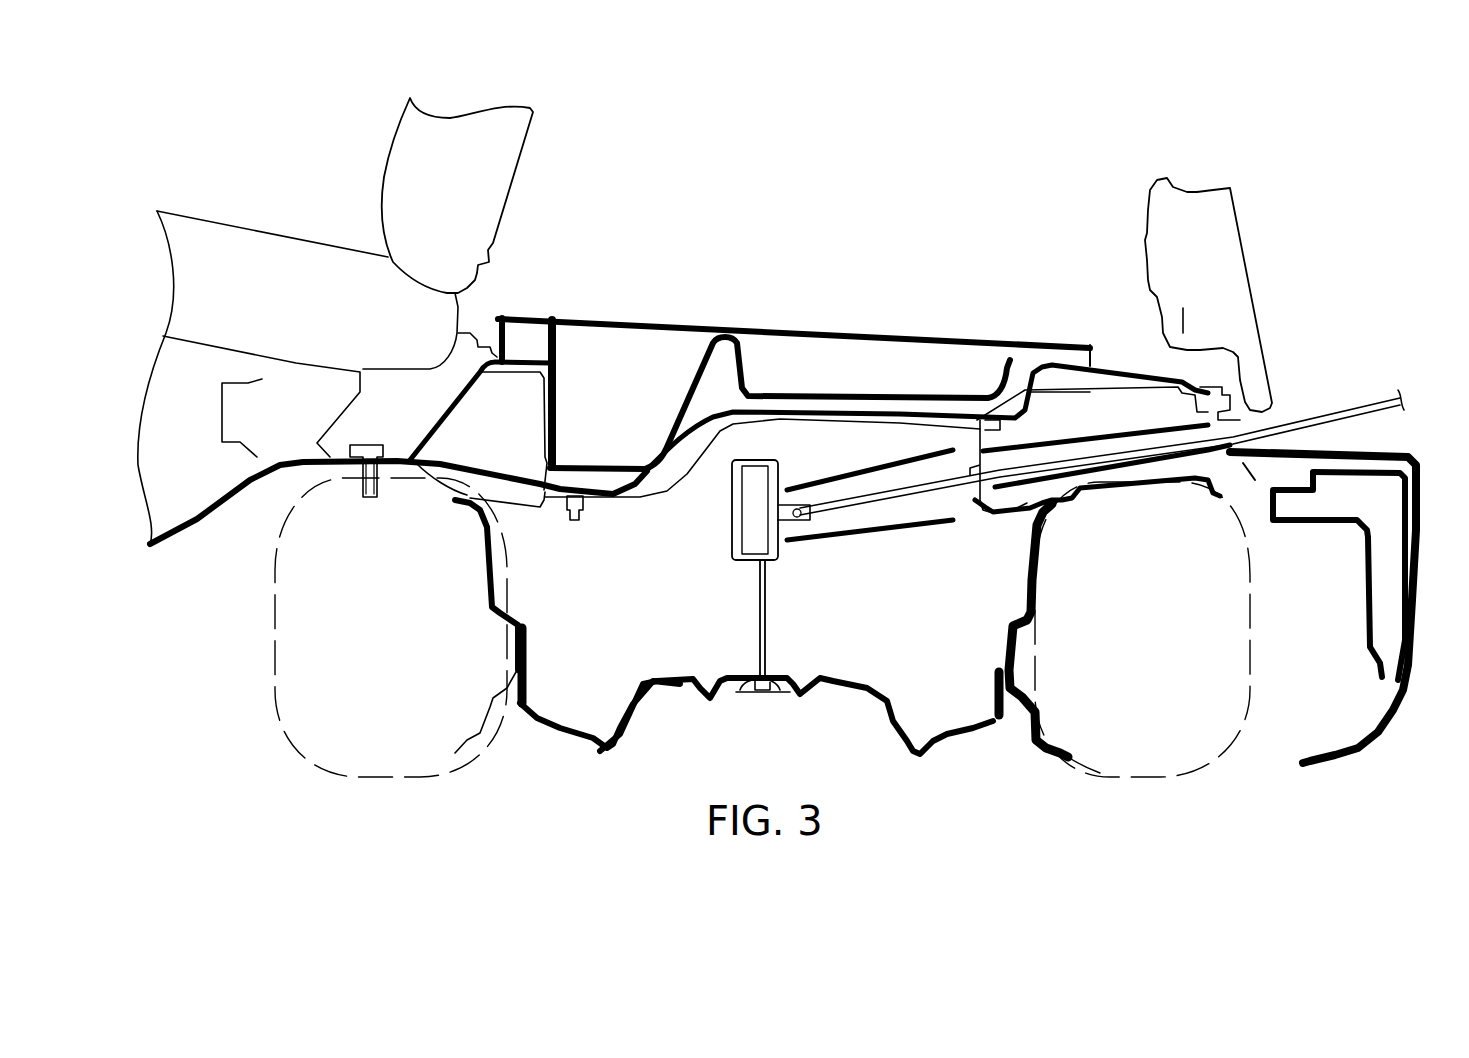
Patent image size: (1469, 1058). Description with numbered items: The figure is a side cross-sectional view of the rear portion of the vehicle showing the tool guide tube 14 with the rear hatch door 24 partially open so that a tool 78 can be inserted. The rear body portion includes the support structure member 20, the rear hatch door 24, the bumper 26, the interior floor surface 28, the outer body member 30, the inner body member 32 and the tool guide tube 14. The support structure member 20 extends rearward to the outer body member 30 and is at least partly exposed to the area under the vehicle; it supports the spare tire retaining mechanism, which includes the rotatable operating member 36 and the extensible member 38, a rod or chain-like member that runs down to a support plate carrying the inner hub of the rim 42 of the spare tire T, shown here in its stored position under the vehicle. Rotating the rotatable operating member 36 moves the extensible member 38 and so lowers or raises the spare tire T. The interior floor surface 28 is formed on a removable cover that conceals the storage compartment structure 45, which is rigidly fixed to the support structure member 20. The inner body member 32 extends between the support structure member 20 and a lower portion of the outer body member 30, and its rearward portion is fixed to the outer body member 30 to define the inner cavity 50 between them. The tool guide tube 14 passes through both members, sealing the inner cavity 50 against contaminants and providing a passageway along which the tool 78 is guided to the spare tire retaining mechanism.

The tool guide tube 14 is at (1163, 467).
The support structure member 20 is at (652, 480).
The rear hatch door 24 is at (1225, 310).
The bumper 26 is at (1420, 520).
The interior floor surface 28 is at (773, 328).
The outer body member 30 is at (1233, 420).
The inner body member 32 is at (987, 433).
The rotatable operating member 36 is at (790, 497).
The extensible member 38 is at (763, 613).
The rim 42 is at (897, 712).
The storage compartment structure 45 is at (667, 407).
The inner cavity 50 is at (1083, 438).
The tool 78 is at (1363, 400).
The spare tire T is at (275, 694).